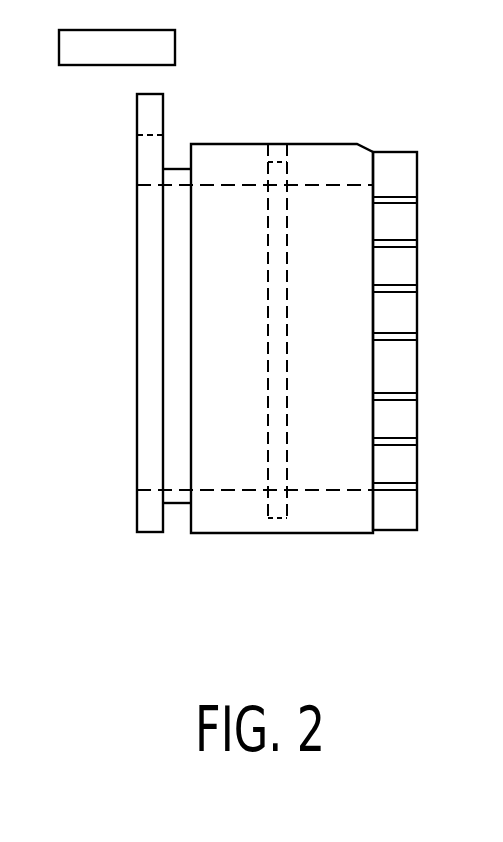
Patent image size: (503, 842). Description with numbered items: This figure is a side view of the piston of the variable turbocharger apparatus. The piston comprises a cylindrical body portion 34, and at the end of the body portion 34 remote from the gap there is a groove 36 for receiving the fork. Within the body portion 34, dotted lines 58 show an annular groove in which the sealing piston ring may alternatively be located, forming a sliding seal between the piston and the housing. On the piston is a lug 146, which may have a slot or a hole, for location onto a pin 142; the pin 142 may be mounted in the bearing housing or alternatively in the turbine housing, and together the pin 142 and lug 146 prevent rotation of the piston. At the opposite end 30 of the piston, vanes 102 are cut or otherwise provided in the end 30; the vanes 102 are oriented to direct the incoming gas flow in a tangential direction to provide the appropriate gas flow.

The pin 142 is at (150, 49).
The lug 146 is at (163, 120).
The end 30 is at (363, 146).
The cylindrical body portion 34 is at (332, 535).
The groove 36 is at (180, 518).
The dotted lines 58 is at (280, 144).
The vanes 102 is at (385, 513).